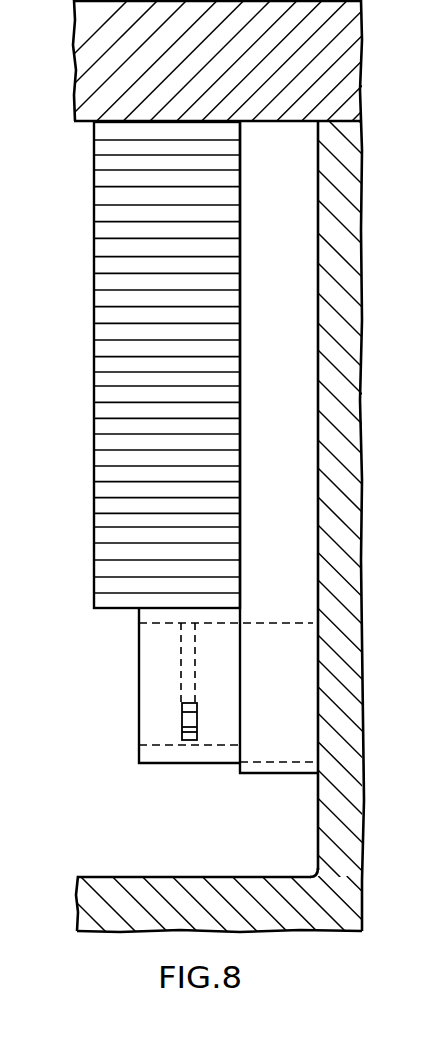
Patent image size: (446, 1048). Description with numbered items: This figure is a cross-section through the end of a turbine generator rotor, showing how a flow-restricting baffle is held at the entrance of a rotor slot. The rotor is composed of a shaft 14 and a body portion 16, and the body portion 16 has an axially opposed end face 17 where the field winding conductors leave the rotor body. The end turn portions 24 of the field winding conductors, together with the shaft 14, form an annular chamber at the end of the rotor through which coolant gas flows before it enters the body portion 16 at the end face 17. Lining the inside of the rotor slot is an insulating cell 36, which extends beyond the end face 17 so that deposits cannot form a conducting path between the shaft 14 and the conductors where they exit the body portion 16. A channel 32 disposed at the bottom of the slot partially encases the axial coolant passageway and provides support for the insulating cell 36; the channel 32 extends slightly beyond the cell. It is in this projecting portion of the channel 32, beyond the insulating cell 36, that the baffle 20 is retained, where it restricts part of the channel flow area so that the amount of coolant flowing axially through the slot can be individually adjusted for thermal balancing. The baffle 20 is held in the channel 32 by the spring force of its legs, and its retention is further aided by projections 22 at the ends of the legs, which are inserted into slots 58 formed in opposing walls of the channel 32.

The shaft 14 is at (176, 877).
The body portion 16 is at (352, 192).
The end face 17 is at (318, 850).
The baffle 20 is at (182, 642).
The projections 22 is at (200, 737).
The end turn portions 24 is at (98, 334).
The channel 32 is at (158, 763).
The insulating cell 36 is at (271, 773).
The slots 58 is at (182, 705).